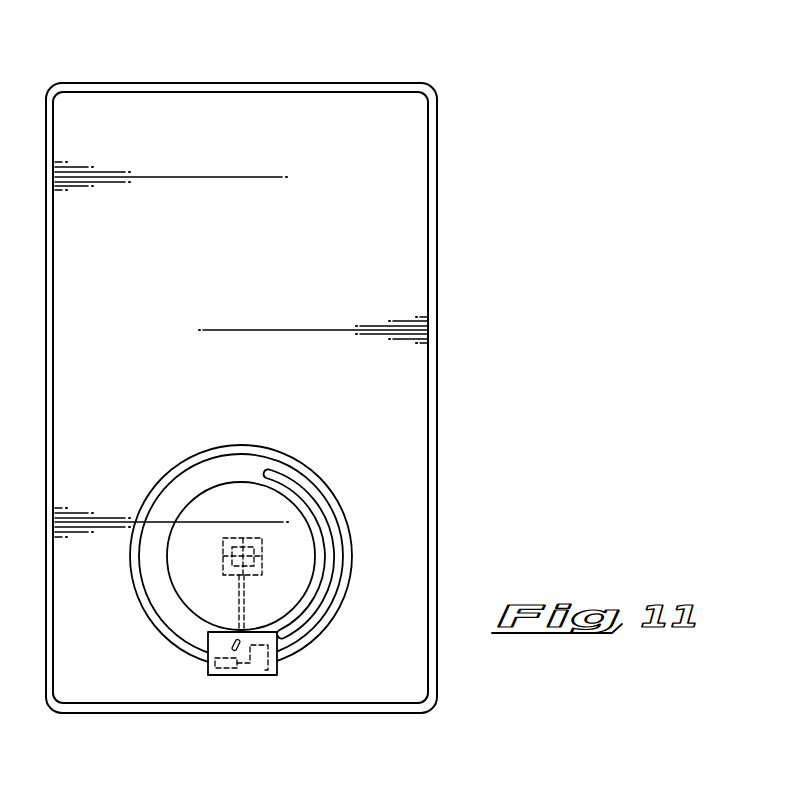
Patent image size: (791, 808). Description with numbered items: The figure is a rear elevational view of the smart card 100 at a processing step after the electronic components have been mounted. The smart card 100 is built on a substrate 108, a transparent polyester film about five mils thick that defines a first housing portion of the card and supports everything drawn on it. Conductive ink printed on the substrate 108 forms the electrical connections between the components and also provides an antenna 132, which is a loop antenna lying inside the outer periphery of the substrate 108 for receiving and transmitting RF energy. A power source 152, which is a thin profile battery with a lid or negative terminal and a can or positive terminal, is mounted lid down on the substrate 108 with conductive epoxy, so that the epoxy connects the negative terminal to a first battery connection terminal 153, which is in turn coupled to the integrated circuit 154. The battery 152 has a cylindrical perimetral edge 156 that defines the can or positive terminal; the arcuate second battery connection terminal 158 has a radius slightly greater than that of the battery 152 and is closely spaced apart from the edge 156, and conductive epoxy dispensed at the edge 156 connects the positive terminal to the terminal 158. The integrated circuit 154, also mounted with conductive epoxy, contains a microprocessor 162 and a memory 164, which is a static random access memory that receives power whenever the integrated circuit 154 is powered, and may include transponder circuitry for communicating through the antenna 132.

The smart card 100 is at (330, 372).
The substrate 108 is at (165, 83).
The antenna 132 is at (297, 460).
The power source 152 is at (198, 495).
The first battery connection terminal 153 is at (262, 570).
The integrated circuit 154 is at (193, 698).
The perimetral edge 156 is at (167, 629).
The second battery connection terminal 158 is at (323, 515).
The microprocessor 162 is at (262, 677).
The memory 164 is at (208, 669).